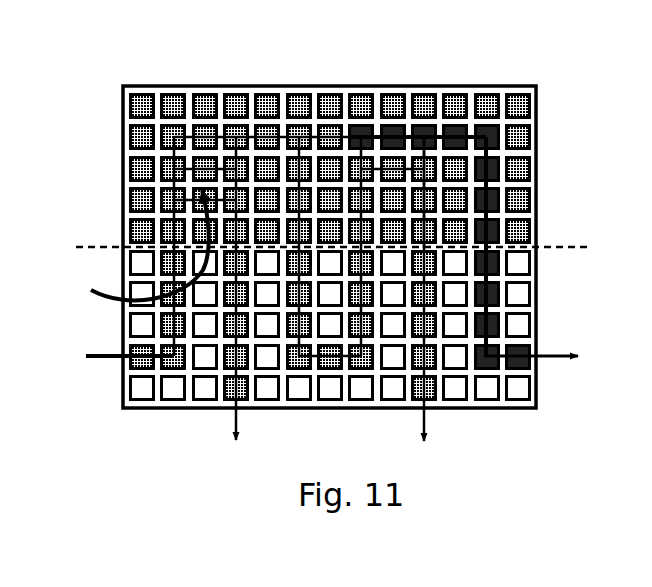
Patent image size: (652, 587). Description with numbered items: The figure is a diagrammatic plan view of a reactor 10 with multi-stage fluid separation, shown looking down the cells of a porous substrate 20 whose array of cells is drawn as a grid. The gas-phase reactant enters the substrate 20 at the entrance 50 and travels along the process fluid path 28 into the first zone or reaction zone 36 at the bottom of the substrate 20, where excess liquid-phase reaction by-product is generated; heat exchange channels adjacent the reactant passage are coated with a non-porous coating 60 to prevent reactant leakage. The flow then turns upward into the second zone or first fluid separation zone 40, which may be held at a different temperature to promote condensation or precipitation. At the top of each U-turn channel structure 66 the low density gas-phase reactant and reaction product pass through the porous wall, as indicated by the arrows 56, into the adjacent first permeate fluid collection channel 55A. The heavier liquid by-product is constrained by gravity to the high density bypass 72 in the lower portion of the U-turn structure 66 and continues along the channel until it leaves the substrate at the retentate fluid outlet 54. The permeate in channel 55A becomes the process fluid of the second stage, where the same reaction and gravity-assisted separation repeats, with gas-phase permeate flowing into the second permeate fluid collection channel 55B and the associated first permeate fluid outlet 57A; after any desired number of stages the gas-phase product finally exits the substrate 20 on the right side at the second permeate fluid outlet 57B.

The reactor 10 is at (90, 412).
The porous substrate 20 is at (113, 158).
The process fluid path 28 is at (105, 332).
The first zone or reaction zone 36 is at (165, 380).
The second zone or first fluid separation zone 40 is at (165, 92).
The entrance 50 is at (92, 347).
The retentate fluid outlet 54 is at (240, 428).
The first permeate fluid collection channel 55A is at (226, 122).
The second permeate fluid collection channel 55B is at (492, 148).
The arrows 56 is at (236, 138).
The first permeate fluid outlet 57A is at (430, 418).
The second permeate fluid outlet 57B is at (575, 360).
The non-porous coating 60 is at (135, 222).
The U-turn channel structure 66 is at (135, 245).
The high density bypass 72 is at (395, 189).